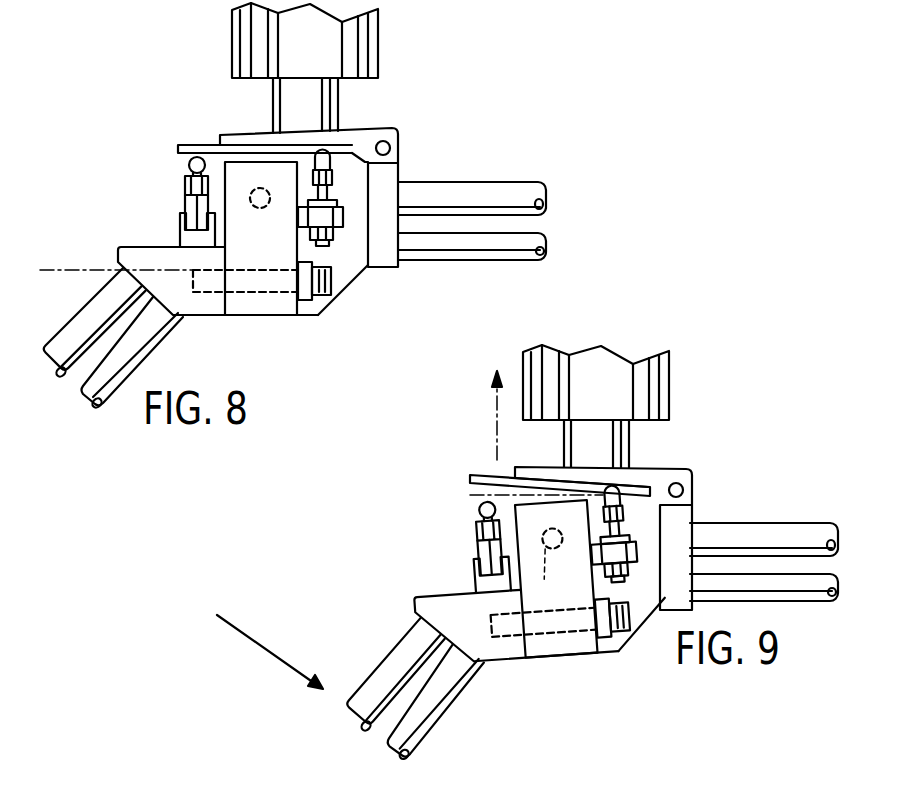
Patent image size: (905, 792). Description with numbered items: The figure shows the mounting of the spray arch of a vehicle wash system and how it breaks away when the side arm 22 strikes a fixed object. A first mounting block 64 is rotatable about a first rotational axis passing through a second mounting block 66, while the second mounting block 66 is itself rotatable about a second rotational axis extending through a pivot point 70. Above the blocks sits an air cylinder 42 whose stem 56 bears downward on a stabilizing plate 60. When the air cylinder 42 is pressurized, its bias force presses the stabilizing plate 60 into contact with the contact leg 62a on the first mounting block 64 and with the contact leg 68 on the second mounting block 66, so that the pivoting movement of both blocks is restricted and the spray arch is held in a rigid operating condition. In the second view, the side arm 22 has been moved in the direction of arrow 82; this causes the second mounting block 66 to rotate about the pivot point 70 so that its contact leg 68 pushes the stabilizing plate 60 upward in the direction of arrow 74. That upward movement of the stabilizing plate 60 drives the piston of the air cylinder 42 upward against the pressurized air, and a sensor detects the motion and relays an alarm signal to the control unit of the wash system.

In FIG. 9, the side arm 22 is at (362, 642).
In FIG. 8, the air cylinder 42 is at (367, 47).
In FIG. 9, the air cylinder 42 is at (657, 387).
In FIG. 8, the stem 56 is at (327, 108).
In FIG. 9, the stem 56 is at (633, 440).
In FIG. 8, the stabilizing plate 60 is at (191, 144).
In FIG. 9, the stabilizing plate 60 is at (472, 480).
In FIG. 8, the contact leg 62a is at (185, 198).
In FIG. 8, the first mounting block 64 is at (147, 265).
In FIG. 8, the second mounting block 66 is at (267, 303).
In FIG. 9, the second mounting block 66 is at (553, 645).
In FIG. 8, the contact leg 68 is at (333, 182).
In FIG. 9, the contact leg 68 is at (617, 517).
In FIG. 8, the pivot point 70 is at (252, 208).
In FIG. 9, the pivot point 70 is at (550, 565).
In FIG. 9, the arrow 74 is at (492, 405).
In FIG. 9, the arrow 82 is at (265, 648).